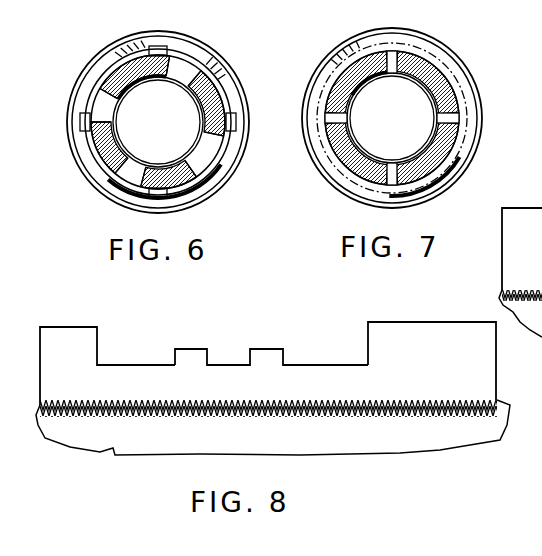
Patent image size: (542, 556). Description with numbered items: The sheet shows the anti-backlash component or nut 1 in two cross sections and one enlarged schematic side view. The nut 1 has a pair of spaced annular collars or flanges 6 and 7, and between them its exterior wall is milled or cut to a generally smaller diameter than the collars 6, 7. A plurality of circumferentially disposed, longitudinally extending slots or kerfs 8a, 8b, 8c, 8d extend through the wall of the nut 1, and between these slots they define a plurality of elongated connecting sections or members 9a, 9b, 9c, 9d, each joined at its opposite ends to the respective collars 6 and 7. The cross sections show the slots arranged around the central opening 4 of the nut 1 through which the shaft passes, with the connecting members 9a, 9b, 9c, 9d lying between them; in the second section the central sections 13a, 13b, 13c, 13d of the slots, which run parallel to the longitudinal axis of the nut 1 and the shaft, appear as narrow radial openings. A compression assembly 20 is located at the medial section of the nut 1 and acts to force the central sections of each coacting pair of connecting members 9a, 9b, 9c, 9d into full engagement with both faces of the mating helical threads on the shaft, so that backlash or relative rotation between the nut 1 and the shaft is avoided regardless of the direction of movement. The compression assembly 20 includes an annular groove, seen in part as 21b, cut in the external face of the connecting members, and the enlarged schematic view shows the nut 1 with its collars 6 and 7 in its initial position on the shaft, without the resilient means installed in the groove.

In FIG. 6, the component or nut 1 is at (242, 68).
In FIG. 7, the component or nut 1 is at (472, 52).
In FIG. 6, the shaft bore 4 is at (166, 128).
In FIG. 7, the shaft bore 4 is at (400, 124).
In FIG. 8, the annular collar or flange 6 is at (70, 335).
In FIG. 6, the annular collar or flange 7 is at (218, 62).
In FIG. 7, the annular collar or flange 7 is at (450, 50).
In FIG. 8, the annular collar or flange 7 is at (423, 333).
In FIG. 6, the slot or kerf 8a is at (213, 157).
In FIG. 6, the slot or kerf 8b is at (182, 70).
In FIG. 6, the slot or kerf 8c is at (110, 93).
In FIG. 6, the slot or kerf 8d is at (130, 172).
In FIG. 6, the connecting section or member 9a is at (192, 187).
In FIG. 7, the connecting section or member 9a is at (450, 142).
In FIG. 6, the connecting section or member 9b is at (123, 75).
In FIG. 7, the connecting section or member 9b is at (440, 80).
In FIG. 7, the connecting section or member 9c is at (350, 85).
In FIG. 6, the connecting section or member 9d is at (107, 147).
In FIG. 7, the connecting section or member 9d is at (348, 152).
In FIG. 7, the central section of slot 13a is at (400, 185).
In FIG. 7, the central section of slot 13b is at (455, 117).
In FIG. 7, the central section of slot 13c is at (390, 58).
In FIG. 7, the central section of slot 13d is at (335, 121).
In FIG. 7, the compression assembly 20 is at (350, 185).
In FIG. 8, the compression assembly 20 is at (230, 363).
In FIG. 7, the flange 21b is at (463, 163).